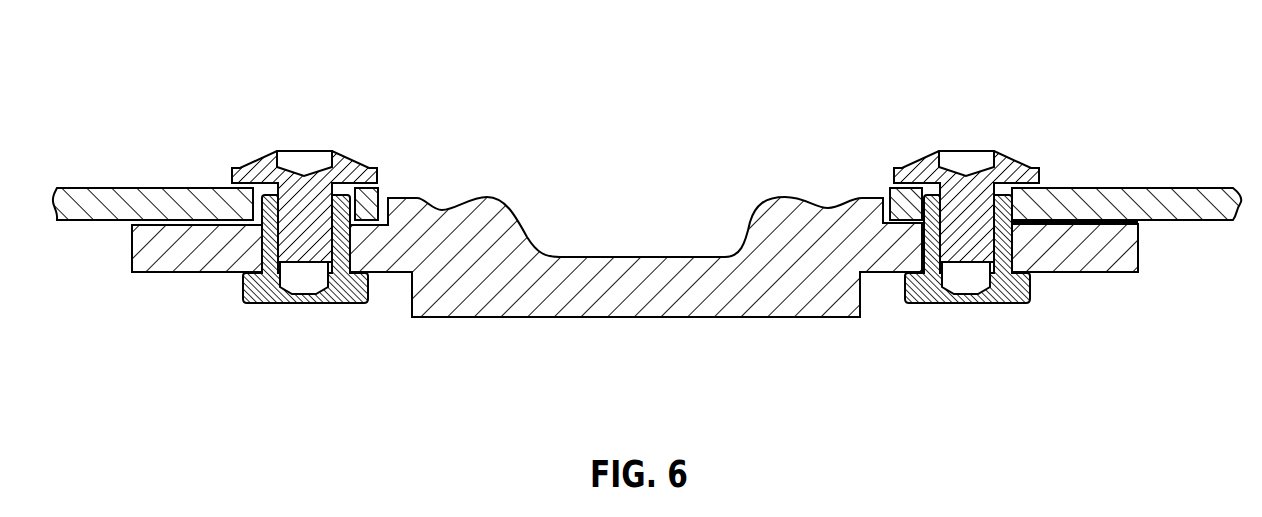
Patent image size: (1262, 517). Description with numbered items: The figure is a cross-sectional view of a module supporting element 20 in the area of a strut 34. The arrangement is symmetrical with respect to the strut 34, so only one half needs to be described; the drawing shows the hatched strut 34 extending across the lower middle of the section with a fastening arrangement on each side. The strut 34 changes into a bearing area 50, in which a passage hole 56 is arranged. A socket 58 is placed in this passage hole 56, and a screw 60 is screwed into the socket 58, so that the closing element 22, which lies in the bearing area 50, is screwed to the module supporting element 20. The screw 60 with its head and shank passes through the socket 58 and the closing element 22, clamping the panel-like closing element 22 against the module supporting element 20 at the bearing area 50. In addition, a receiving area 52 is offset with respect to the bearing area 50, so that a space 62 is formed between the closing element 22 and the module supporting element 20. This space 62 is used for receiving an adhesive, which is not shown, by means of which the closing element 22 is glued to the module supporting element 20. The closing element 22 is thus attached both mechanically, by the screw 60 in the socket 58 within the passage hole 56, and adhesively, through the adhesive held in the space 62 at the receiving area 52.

The module supporting element 20 is at (563, 105).
The closing element 22 is at (888, 190).
The strut 34 is at (637, 297).
The bearing area 50 is at (892, 192).
The receiving area 52 is at (1087, 245).
The passage hole 56 is at (966, 244).
The socket 58 is at (1012, 303).
The screw 60 is at (1007, 158).
The space 62 is at (1113, 224).